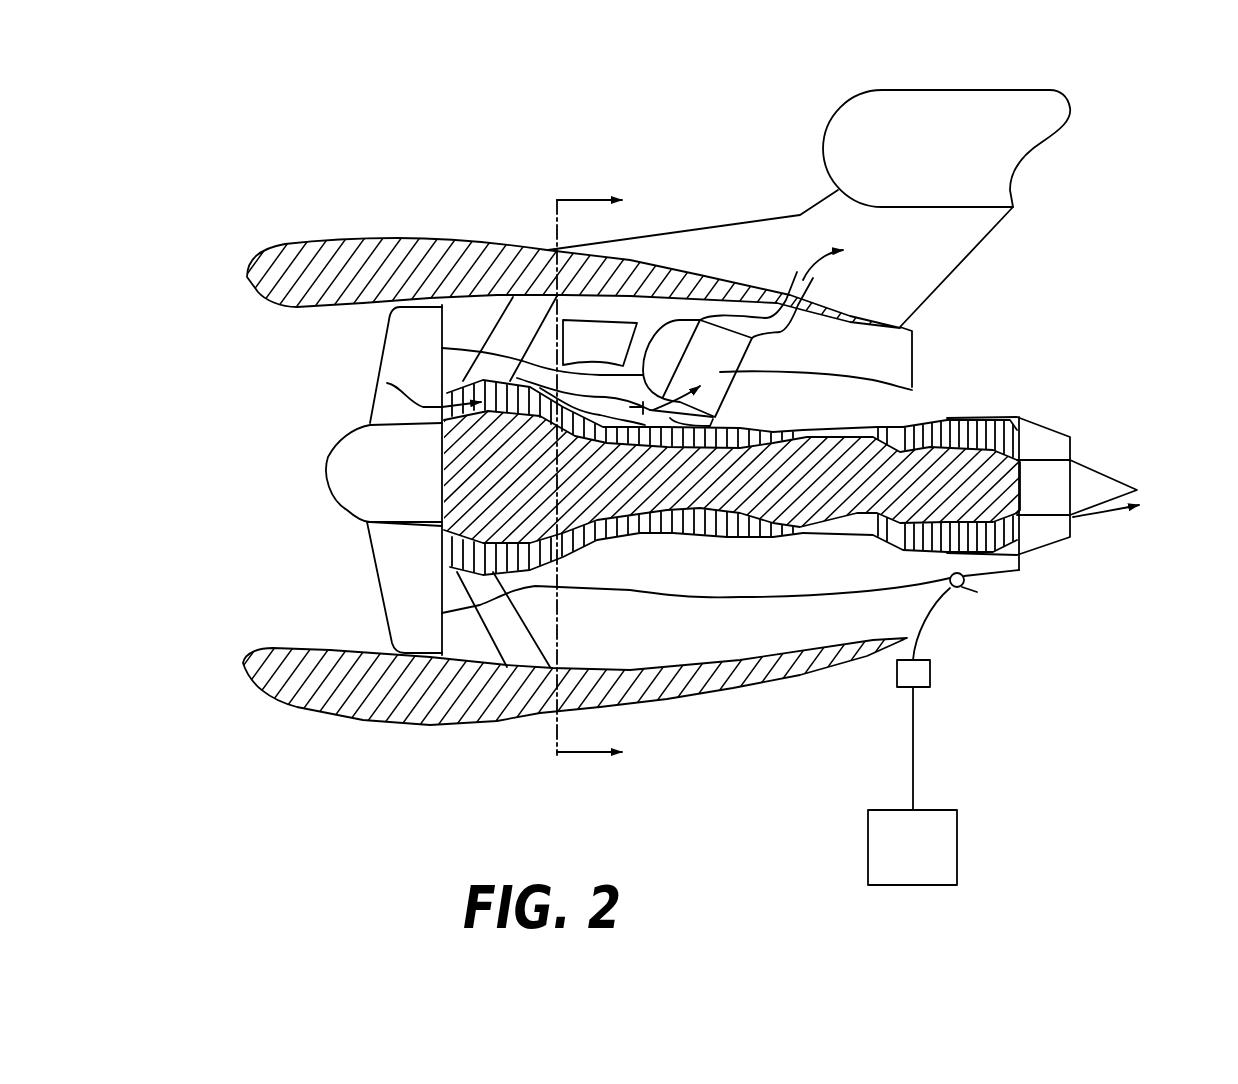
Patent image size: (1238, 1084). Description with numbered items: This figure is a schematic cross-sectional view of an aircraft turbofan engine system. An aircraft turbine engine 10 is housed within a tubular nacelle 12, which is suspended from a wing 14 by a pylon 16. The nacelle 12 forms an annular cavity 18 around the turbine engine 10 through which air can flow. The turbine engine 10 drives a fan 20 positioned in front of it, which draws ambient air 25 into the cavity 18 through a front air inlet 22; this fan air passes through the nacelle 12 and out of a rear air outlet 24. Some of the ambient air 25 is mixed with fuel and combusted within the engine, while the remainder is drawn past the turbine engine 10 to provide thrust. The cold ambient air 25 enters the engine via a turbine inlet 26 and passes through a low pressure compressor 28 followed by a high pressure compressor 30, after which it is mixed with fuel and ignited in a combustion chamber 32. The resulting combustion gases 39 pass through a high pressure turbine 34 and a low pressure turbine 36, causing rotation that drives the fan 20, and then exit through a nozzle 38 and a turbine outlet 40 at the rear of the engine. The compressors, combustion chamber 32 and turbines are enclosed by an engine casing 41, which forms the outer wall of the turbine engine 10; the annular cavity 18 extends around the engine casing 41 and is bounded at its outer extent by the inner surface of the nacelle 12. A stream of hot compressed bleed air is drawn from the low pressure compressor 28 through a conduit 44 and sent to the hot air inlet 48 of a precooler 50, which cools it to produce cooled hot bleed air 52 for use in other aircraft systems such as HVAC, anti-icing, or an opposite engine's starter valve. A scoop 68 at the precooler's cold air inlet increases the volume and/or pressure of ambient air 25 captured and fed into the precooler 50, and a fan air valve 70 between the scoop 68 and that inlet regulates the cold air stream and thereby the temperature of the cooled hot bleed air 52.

The turbine engine 10 is at (597, 510).
The nacelle 12 is at (268, 241).
The wing 14 is at (872, 110).
The pylon 16 is at (753, 237).
The annular cavity 18 is at (337, 362).
The fan 20 is at (380, 567).
The front air inlet 22 is at (287, 433).
The rear air outlet 24 is at (1092, 630).
The ambient air 25 is at (387, 383).
The turbine inlet 26 is at (442, 548).
The low pressure compressor 28 is at (442, 613).
The high pressure compressor 30 is at (730, 530).
The combustion chamber 32 is at (850, 527).
The high pressure turbine 34 is at (903, 433).
The low pressure turbine 36 is at (970, 430).
The nozzle 38 is at (1053, 437).
The combustion gases 39 is at (1097, 523).
The turbine outlet 40 is at (1073, 457).
The engine casing 41 is at (845, 416).
The conduit 44 is at (442, 347).
The hot air inlet 48 is at (700, 408).
The precooler 50 is at (691, 373).
The cooled hot bleed air 52 is at (820, 262).
The scoop 68 is at (600, 343).
The fan air valve 70 is at (450, 252).